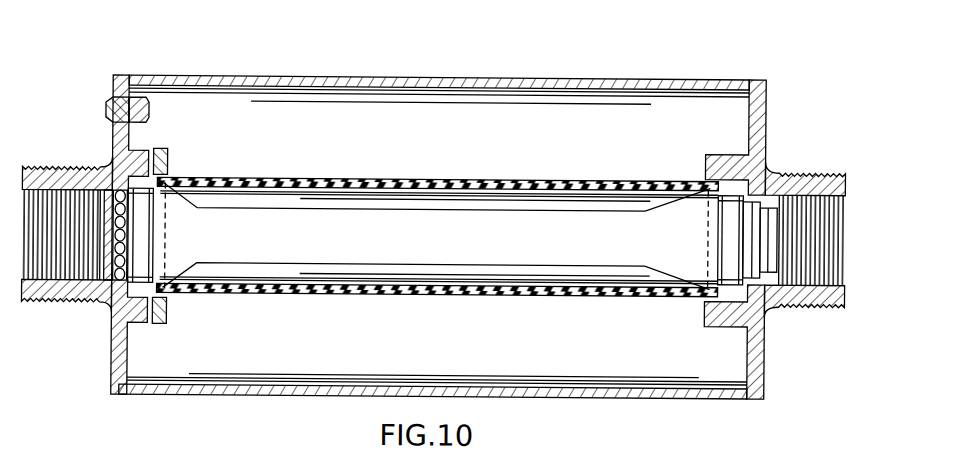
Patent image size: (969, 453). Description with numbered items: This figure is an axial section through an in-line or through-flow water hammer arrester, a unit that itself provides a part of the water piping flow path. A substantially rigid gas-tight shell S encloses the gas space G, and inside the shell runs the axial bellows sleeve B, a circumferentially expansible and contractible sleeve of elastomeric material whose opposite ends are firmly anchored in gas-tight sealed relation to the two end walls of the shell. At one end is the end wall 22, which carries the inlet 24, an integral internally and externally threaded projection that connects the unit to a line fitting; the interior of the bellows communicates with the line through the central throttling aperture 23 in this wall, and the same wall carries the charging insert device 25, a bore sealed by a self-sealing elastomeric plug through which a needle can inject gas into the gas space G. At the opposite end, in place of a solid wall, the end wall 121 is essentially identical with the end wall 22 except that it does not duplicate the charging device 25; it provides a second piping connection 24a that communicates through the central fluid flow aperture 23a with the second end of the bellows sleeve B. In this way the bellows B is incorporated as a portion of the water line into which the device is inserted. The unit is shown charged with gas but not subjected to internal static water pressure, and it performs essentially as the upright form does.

The shell S is at (451, 74).
The gas space G is at (490, 143).
The bellows sleeve B is at (325, 175).
The end wall 22 is at (115, 350).
The inlet 24 is at (68, 167).
The charging insert device 25 is at (106, 111).
The throttling aperture 23 is at (110, 233).
The central fluid flow aperture 23a is at (135, 248).
The end wall 121 is at (764, 116).
The second piping connection 24a is at (790, 168).